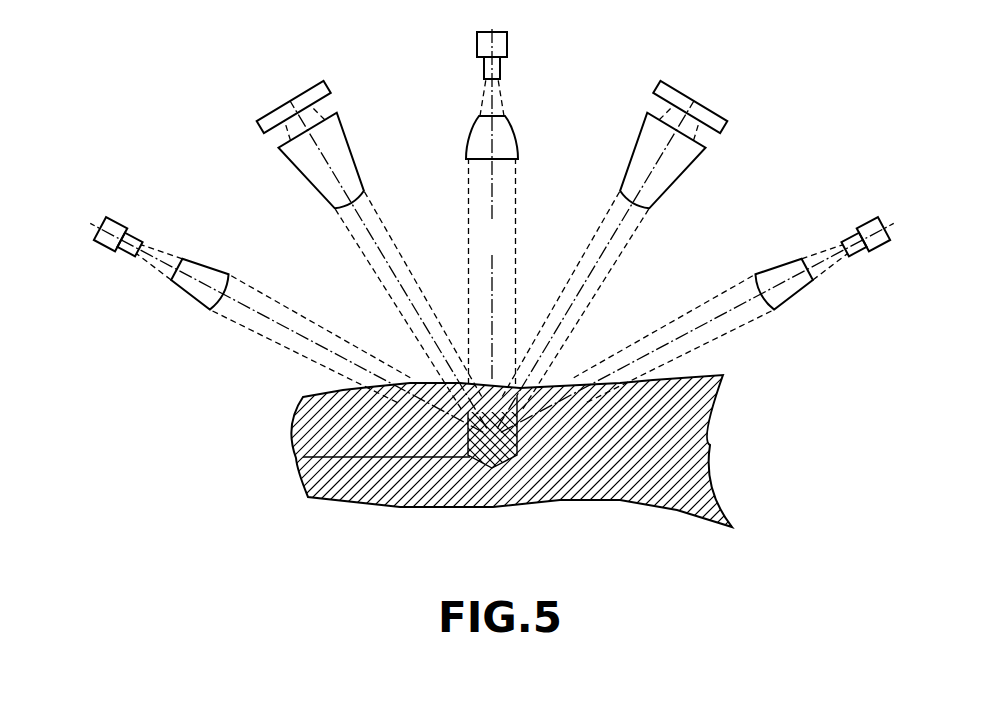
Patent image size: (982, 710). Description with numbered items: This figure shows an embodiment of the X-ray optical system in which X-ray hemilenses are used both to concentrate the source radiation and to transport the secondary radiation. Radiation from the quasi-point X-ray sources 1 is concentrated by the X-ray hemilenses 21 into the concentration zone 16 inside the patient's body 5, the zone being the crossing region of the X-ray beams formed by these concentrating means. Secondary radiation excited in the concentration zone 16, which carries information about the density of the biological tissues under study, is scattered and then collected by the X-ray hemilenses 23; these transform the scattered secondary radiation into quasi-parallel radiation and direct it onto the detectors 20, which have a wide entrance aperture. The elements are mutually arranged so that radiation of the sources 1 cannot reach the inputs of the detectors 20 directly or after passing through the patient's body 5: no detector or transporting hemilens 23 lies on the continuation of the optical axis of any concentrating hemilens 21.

The quasi-point X-ray source 1 is at (107, 242).
The patient's body 5 is at (297, 412).
The concentration zone 16 is at (303, 458).
The detector with wide entrance aperture 20 is at (253, 122).
The X-ray hemilens 21 is at (195, 290).
The X-ray hemilens 23 is at (307, 168).